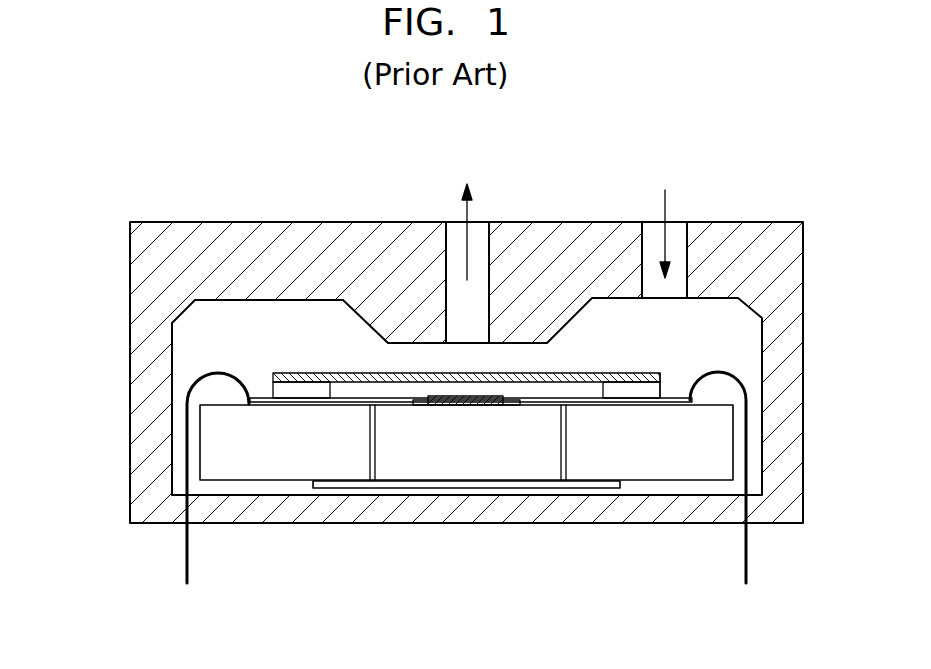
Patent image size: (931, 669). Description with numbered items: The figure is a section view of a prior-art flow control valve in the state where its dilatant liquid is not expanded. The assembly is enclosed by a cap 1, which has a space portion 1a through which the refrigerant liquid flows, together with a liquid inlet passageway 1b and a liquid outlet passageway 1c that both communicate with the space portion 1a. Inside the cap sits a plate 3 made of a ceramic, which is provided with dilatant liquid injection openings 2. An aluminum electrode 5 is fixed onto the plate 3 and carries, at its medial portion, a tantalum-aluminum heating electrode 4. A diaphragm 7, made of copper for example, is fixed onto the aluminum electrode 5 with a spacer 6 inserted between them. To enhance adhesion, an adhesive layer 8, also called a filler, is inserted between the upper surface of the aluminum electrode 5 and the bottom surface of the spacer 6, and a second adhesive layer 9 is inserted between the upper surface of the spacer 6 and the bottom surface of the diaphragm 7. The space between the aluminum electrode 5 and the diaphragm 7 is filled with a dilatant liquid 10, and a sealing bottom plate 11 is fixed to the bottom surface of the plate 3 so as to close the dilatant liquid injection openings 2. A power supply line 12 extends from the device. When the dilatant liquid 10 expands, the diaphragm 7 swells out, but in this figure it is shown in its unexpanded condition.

The cap 1 is at (232, 232).
The space portion 1a is at (208, 335).
The liquid inlet passageway 1b is at (677, 238).
The liquid outlet passageway 1c is at (480, 242).
The dilatant liquid injection openings 2 is at (369, 468).
The plate 3 is at (700, 472).
The heating electrode 4 is at (484, 411).
The aluminum electrode 5 is at (528, 409).
The spacer 6 is at (657, 389).
The diaphragm 7 is at (584, 378).
The adhesive layer 8 is at (633, 393).
The adhesive layer 9 is at (660, 382).
The dilatant liquid 10 is at (356, 396).
The sealing bottom plate 11 is at (427, 489).
The power supply line 12 is at (187, 557).